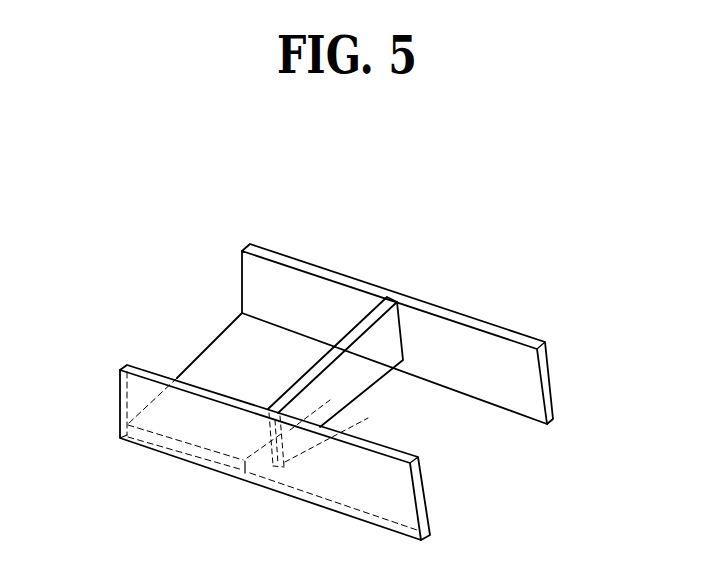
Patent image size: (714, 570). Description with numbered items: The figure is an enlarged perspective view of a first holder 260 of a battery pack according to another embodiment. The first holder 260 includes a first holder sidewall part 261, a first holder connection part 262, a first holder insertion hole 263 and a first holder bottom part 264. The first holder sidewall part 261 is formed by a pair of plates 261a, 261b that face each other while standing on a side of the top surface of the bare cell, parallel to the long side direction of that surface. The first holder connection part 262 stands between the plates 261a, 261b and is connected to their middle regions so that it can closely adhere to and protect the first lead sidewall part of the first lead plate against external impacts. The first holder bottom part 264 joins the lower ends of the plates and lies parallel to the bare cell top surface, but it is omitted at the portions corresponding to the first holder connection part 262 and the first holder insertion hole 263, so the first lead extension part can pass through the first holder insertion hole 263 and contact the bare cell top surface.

The first holder 260 is at (572, 297).
The first holder sidewall part 261 is at (147, 225).
The plate 261a is at (120, 368).
The plate 261b is at (249, 244).
The first holder connection part 262 is at (400, 303).
The first holder insertion hole 263 is at (368, 400).
The first holder bottom part 264 is at (272, 345).